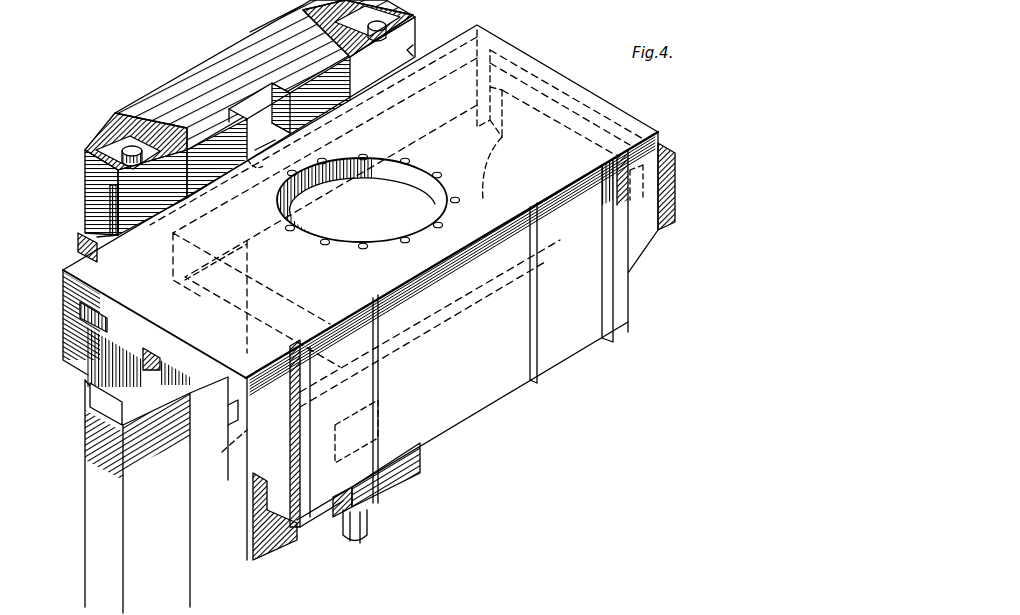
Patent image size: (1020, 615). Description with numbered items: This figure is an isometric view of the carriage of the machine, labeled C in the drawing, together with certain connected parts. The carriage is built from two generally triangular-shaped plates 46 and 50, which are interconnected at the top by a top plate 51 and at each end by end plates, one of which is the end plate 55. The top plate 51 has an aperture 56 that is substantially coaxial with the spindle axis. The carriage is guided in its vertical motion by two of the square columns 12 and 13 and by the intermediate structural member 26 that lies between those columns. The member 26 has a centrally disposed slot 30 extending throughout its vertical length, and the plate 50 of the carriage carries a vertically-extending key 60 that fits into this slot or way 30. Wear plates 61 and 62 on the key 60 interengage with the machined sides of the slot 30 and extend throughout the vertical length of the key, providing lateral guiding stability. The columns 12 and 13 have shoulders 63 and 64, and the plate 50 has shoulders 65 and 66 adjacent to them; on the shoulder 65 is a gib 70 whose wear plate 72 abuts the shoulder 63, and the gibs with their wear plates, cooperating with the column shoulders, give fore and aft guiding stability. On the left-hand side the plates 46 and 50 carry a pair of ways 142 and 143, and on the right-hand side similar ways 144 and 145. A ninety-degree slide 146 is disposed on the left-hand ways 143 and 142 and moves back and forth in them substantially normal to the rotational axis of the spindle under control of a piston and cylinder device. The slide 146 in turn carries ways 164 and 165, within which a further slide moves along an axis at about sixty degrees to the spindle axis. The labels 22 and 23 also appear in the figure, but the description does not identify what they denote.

The column 12 is at (100, 140).
The column 13 is at (300, 28).
The locating boss 22 is at (97, 147).
The locating boss 23 is at (396, 28).
The intermediate structural member 26 is at (190, 79).
The slot 30 is at (268, 97).
The plate 46 is at (462, 408).
The plate 50 is at (65, 308).
The top plate 51 is at (75, 264).
The end plate 55 is at (670, 190).
The aperture 56 is at (412, 178).
The key 60 is at (268, 137).
The wear plate 61 is at (293, 131).
The wear plate 62 is at (262, 160).
The shoulder 63 is at (80, 183).
The shoulder 64 is at (402, 17).
The shoulder 65 is at (80, 228).
The shoulder 66 is at (418, 50).
The gib 70 is at (78, 235).
The wear plate 72 is at (107, 230).
The way 142 is at (227, 408).
The way 143 is at (80, 333).
The way 144 is at (490, 87).
The way 145 is at (675, 212).
The slide 146 is at (208, 233).
The way 164 is at (100, 407).
The way 165 is at (233, 447).
The carriage C is at (620, 103).